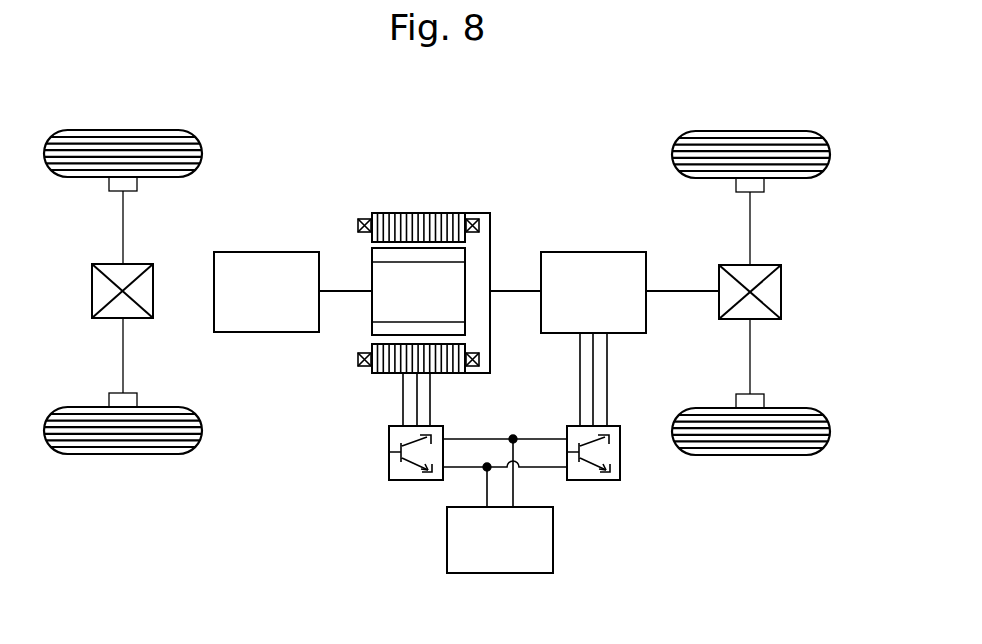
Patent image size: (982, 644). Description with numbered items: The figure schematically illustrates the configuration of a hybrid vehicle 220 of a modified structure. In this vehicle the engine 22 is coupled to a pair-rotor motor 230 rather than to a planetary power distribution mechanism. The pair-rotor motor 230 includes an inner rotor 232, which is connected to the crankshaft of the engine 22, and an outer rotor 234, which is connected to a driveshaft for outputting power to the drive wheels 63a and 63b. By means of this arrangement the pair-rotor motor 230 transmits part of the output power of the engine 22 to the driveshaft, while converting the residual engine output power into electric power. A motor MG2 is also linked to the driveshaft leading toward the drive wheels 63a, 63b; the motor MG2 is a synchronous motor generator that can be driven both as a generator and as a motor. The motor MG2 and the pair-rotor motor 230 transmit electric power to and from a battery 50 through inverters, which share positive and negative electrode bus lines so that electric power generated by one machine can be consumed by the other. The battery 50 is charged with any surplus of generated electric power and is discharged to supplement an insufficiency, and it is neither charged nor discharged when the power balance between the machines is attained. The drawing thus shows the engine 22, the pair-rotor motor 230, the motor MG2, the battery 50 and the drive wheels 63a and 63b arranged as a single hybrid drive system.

The engine 22 is at (268, 252).
The hybrid vehicle 220 is at (518, 227).
The pair-rotor motor 230 is at (404, 233).
The inner rotor 232 is at (372, 272).
The outer rotor 234 is at (427, 212).
The motor MG2 is at (594, 252).
The battery 50 is at (553, 541).
The drive wheel 63a is at (750, 131).
The drive wheel 63b is at (750, 456).